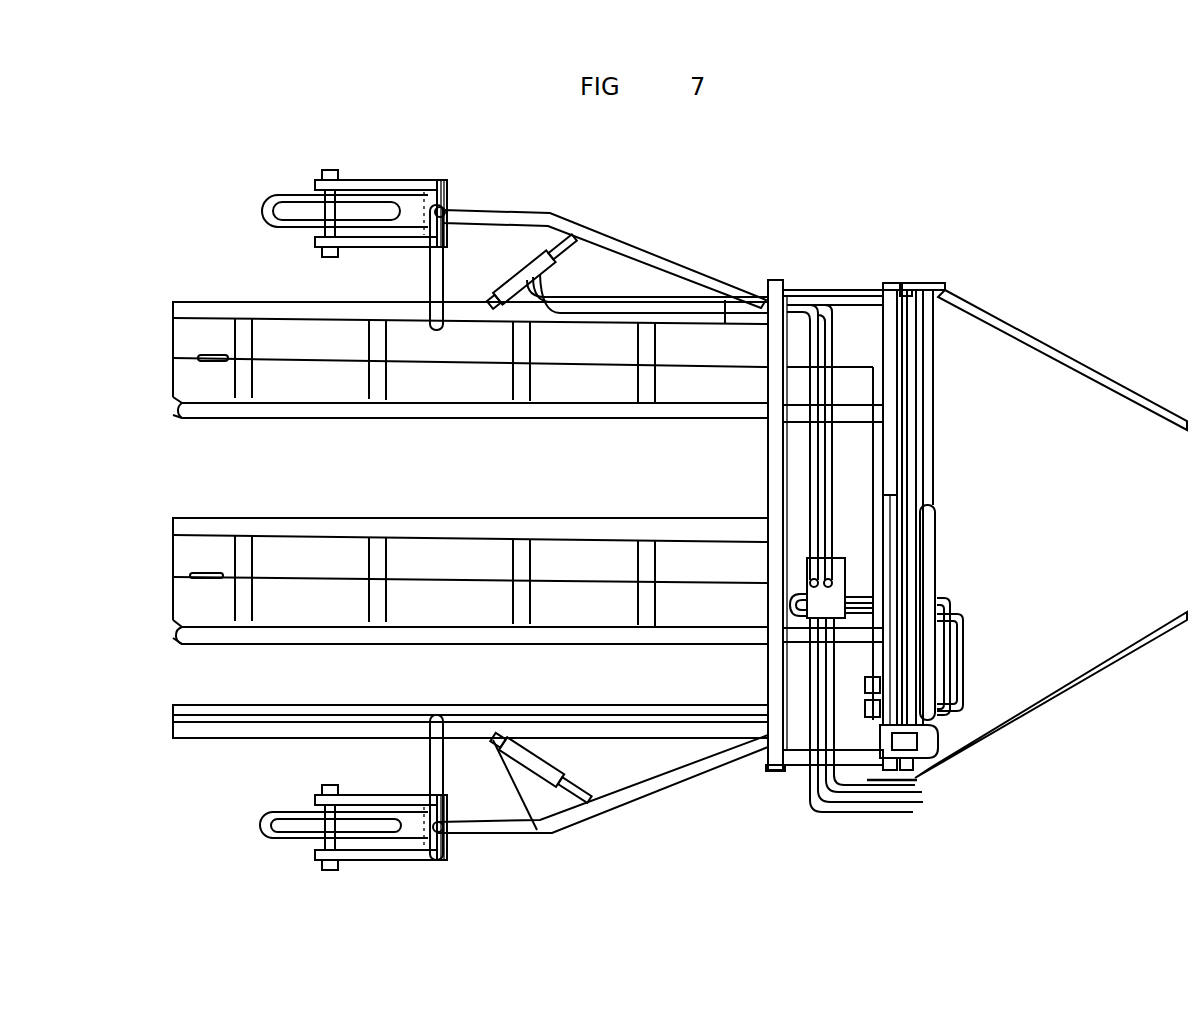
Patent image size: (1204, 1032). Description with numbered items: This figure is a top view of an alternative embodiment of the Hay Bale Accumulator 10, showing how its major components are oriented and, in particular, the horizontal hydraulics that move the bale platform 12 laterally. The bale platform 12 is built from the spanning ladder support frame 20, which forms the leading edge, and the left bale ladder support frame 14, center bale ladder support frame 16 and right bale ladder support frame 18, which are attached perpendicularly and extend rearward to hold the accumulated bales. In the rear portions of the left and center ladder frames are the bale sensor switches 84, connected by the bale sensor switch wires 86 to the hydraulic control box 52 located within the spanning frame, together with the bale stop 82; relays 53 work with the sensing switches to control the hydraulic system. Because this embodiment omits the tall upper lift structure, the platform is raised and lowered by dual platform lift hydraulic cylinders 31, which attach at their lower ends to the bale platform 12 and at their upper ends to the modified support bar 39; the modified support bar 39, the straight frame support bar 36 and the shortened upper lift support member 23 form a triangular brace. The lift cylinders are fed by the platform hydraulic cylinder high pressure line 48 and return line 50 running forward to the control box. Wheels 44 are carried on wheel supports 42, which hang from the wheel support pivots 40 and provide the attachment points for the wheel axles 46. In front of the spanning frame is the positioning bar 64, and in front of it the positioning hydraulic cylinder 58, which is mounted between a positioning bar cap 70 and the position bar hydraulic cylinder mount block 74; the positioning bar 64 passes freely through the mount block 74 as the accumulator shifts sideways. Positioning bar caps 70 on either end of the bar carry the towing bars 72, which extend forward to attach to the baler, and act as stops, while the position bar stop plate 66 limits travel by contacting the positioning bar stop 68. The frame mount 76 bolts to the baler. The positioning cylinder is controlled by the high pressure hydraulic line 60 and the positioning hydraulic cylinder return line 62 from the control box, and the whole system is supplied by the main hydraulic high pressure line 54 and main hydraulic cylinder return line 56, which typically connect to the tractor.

The Hay Bale Accumulator 10 is at (783, 250).
The bale platform 12 is at (851, 282).
The left bale ladder support frame 14 is at (168, 346).
The center bale ladder support frame 16 is at (168, 568).
The right bale ladder support frame 18 is at (168, 724).
The spanning ladder support frame 20 is at (792, 773).
The shortened upper lift support member 23 is at (428, 273).
The dual platform lift hydraulic cylinders 31 is at (532, 255).
The straight frame support bar 36 is at (725, 322).
The modified support bar 39 is at (493, 226).
The wheel support pivots 40 is at (447, 208).
The wheel supports 42 is at (405, 178).
The wheels 44 is at (275, 195).
The wheel axles 46 is at (330, 168).
The platform hydraulic cylinder high pressure line 48 is at (672, 290).
The platform hydraulic cylinder return line 50 is at (688, 297).
The hydraulic control box 52 is at (858, 582).
The relays 53 is at (860, 712).
The main hydraulic high pressure line 54 is at (923, 803).
The main hydraulic cylinder return line 56 is at (893, 822).
The positioning hydraulic cylinder 58 is at (940, 520).
The high pressure hydraulic line 60 is at (967, 682).
The positioning hydraulic cylinder return line 62 is at (958, 641).
The positioning bar 64 is at (912, 418).
The position bar stop plate 66 is at (912, 297).
The positioning bar stop 68 is at (890, 490).
The positioning bar caps 70 is at (939, 279).
The towing bars 72 is at (1186, 437).
The position bar hydraulic cylinder mount block 74 is at (942, 735).
The frame mount 76 is at (908, 742).
The bale stop 82 is at (205, 401).
The bale sensor switches 84 is at (215, 363).
The bale sensor switch wires 86 is at (735, 366).